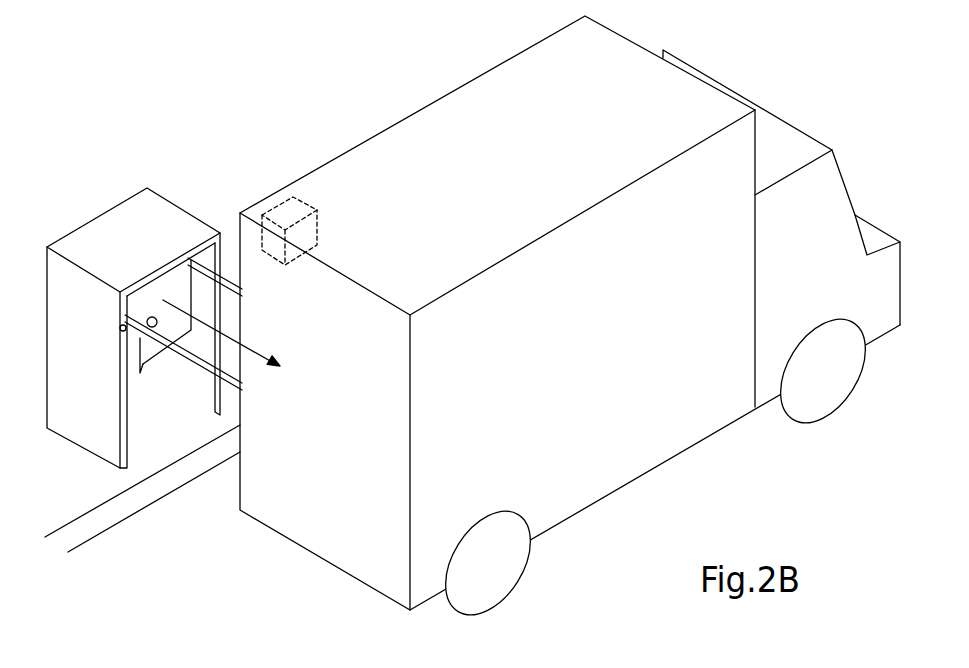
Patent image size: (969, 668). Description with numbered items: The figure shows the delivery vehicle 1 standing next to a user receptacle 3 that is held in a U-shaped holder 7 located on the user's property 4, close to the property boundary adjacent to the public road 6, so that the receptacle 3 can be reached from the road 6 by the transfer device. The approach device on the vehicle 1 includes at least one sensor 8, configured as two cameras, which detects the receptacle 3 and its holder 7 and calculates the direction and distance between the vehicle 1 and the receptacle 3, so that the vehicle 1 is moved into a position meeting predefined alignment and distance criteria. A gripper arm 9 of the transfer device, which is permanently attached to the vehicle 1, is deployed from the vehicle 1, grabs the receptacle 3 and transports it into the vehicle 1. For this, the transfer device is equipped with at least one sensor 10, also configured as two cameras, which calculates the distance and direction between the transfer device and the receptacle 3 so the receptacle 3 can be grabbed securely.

The vehicle 1 is at (595, 373).
The receptacle 3 is at (177, 280).
The property 4 is at (163, 280).
The road 6 is at (252, 612).
The U-shaped holder 7 is at (137, 222).
The sensor 8 is at (283, 212).
The gripper arm 9 is at (205, 370).
The sensor 10 is at (156, 345).